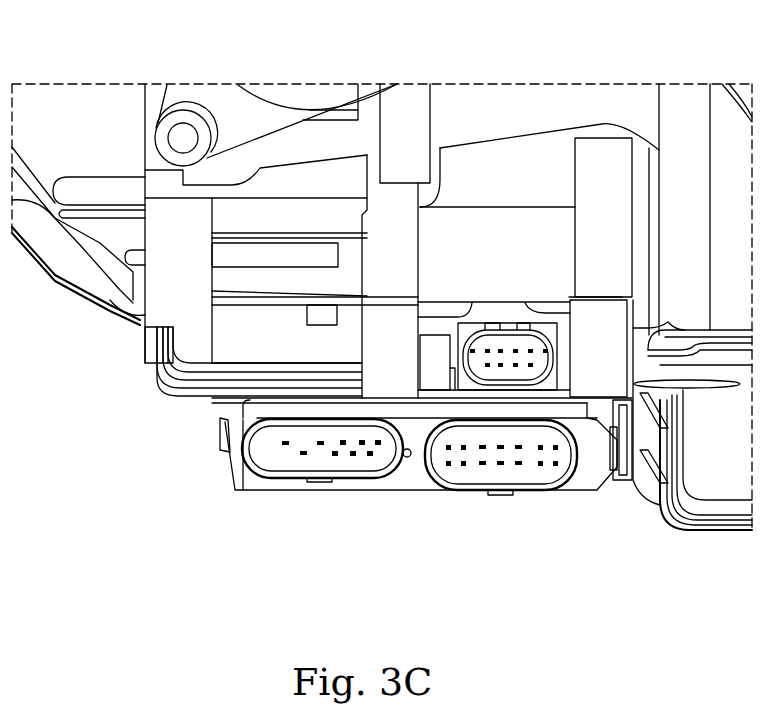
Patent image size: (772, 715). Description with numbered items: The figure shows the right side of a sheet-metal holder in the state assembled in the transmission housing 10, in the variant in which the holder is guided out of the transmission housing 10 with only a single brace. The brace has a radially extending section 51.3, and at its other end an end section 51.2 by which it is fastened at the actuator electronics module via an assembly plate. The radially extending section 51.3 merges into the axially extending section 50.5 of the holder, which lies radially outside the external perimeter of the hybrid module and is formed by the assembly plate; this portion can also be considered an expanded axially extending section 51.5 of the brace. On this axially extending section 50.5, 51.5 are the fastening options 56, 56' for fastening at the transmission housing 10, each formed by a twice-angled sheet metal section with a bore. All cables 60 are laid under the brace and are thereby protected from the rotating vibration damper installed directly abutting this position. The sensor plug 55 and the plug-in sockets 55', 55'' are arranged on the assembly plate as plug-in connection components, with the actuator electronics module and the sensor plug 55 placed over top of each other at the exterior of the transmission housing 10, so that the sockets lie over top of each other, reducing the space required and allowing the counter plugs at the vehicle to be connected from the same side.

The transmission housing 10 is at (506, 130).
The sensor plug 55 is at (507, 310).
The plug-in socket 55' is at (501, 503).
The socket 55'' is at (322, 502).
The fastening option 56 is at (403, 335).
The fastening option 56' is at (629, 362).
The radially extending section 51.3 is at (148, 343).
The cables 60 is at (190, 362).
The expanded axially extending section 51.5 is at (323, 423).
The axially extending section 50.5 is at (198, 397).
The end section 51.2 is at (240, 403).